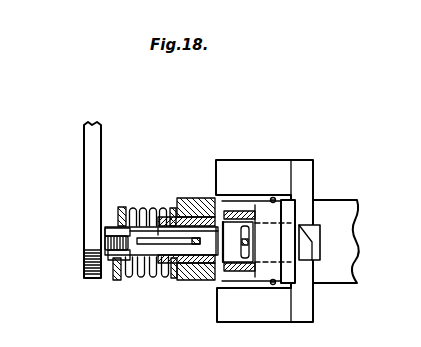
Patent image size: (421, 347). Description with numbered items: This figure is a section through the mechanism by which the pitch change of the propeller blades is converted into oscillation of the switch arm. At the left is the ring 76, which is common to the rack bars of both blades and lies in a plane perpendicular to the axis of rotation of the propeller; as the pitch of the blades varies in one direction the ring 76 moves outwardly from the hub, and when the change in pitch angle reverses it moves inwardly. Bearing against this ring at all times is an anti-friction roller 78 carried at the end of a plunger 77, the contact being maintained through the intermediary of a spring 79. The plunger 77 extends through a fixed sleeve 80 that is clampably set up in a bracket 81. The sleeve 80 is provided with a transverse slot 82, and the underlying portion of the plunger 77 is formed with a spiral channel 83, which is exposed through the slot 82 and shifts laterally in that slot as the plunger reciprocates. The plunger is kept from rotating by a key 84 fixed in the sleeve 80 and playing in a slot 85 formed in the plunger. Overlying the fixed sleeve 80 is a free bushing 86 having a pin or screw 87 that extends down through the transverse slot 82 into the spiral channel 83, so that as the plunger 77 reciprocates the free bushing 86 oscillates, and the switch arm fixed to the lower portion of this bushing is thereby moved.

The ring 76 is at (88, 177).
The plunger 77 is at (142, 230).
The anti-friction roller 78 is at (98, 240).
The spring 79 is at (126, 210).
The fixed sleeve 80 is at (197, 180).
The bracket 81 is at (355, 182).
The transverse slot 82 is at (245, 227).
The spiral channel 83 is at (302, 247).
The key 84 is at (188, 280).
The slot 85 is at (143, 240).
The free bushing 86 is at (277, 200).
The pin or screw 87 is at (247, 250).